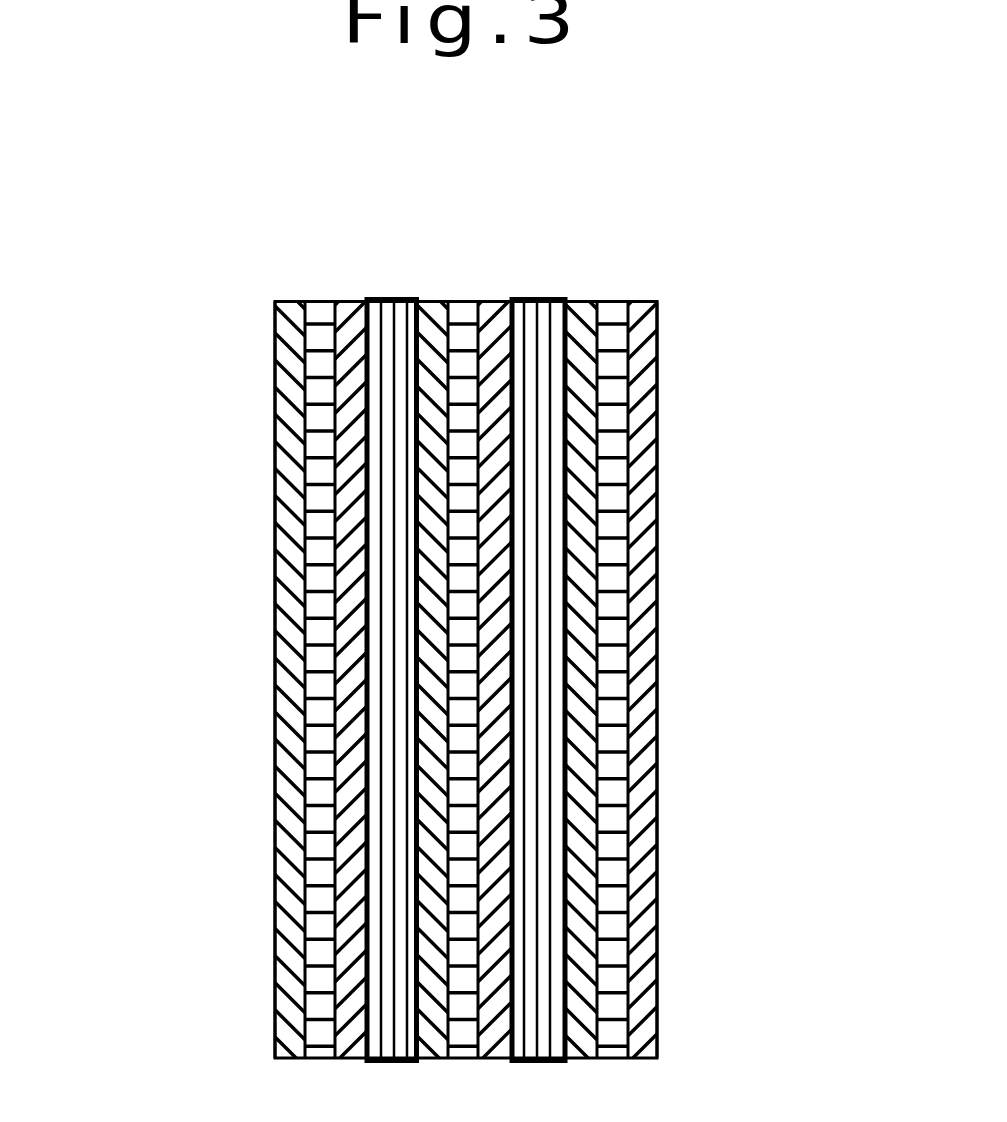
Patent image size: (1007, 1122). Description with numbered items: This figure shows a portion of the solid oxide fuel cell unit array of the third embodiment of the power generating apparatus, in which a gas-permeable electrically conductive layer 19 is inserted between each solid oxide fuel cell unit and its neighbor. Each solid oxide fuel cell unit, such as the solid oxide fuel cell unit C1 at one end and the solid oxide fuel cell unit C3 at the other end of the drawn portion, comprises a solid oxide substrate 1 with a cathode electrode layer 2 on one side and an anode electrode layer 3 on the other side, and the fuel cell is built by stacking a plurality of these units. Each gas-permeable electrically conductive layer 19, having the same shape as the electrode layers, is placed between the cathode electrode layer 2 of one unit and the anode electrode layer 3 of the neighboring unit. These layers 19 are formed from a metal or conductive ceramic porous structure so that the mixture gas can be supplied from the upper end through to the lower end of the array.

The gas-permeable electrically conductive layer 19 is at (390, 299).
The solid oxide substrate 1 is at (318, 470).
The cathode electrode layer 2 is at (287, 417).
The anode electrode layer 3 is at (350, 553).
The solid oxide fuel cell unit C1 is at (140, 395).
The solid oxide fuel cell unit C3 is at (812, 573).